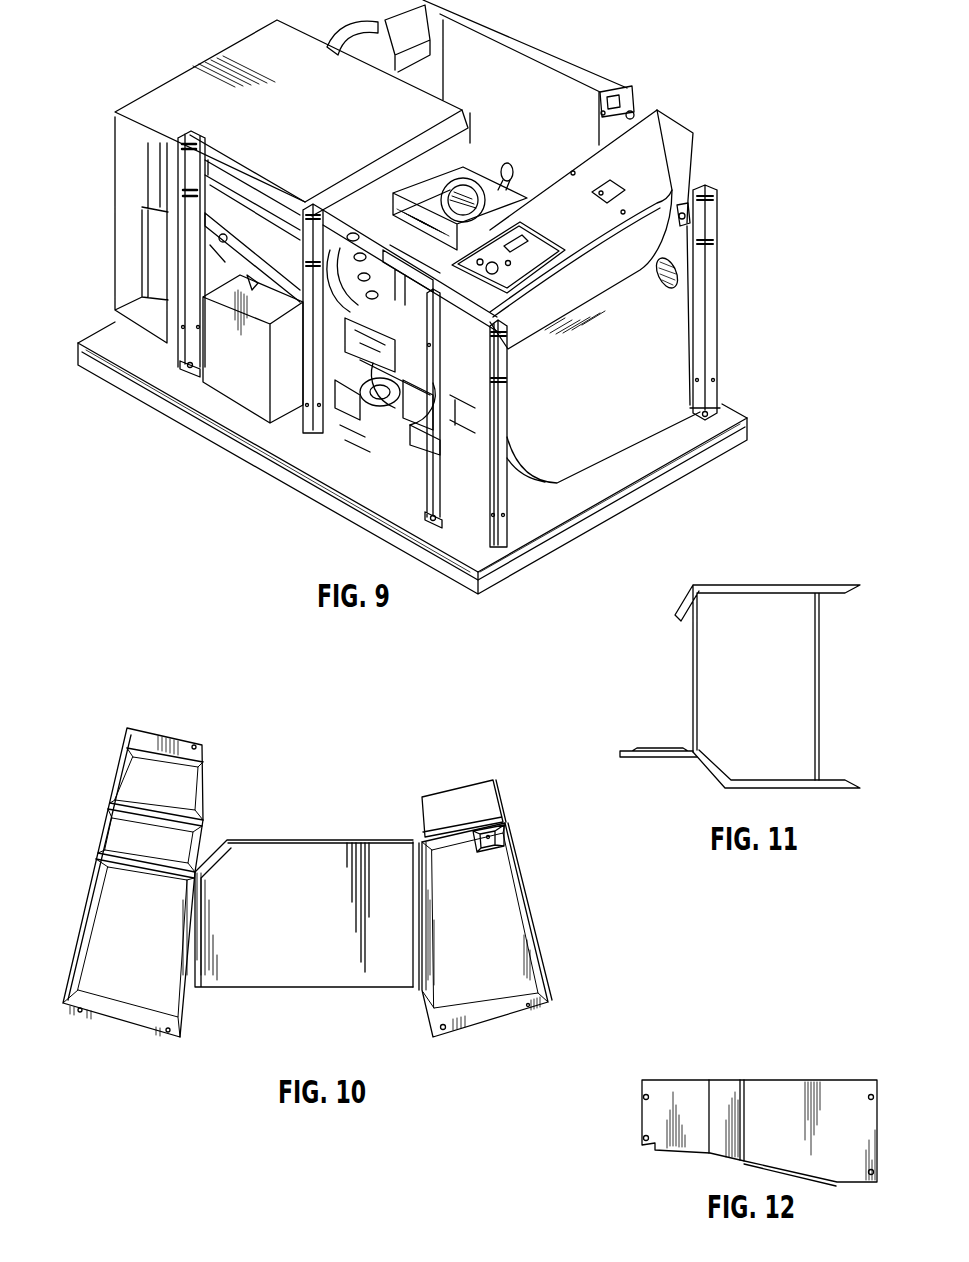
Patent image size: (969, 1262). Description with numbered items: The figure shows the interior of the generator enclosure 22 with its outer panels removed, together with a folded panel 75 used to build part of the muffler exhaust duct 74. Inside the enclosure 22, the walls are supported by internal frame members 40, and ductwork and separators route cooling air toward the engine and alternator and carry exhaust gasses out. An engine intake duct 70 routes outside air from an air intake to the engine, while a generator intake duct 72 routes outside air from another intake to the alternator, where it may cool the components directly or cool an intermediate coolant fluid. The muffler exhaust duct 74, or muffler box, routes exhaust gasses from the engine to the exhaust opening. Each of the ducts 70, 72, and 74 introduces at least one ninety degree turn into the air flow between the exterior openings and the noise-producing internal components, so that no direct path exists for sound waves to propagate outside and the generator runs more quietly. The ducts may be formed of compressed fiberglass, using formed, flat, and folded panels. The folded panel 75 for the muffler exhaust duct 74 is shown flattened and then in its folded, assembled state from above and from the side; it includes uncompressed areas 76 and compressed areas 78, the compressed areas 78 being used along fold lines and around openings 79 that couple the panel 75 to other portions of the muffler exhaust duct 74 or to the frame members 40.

In FIG. 9, the enclosure 22 is at (640, 67).
In FIG. 9, the internal frame members 40 is at (183, 263).
In FIG. 9, the engine intake duct 70 is at (683, 327).
In FIG. 9, the generator intake duct 72 is at (355, 27).
In FIG. 9, the muffler exhaust duct 74 is at (258, 37).
In FIG. 9, the folded panel 75 is at (207, 177).
In FIG. 10, the folded panel 75 is at (170, 708).
In FIG. 11, the folded panel 75 is at (710, 570).
In FIG. 12, the folded panel 75 is at (697, 1028).
In FIG. 10, the uncompressed areas 76 is at (307, 853).
In FIG. 10, the compressed areas 78 is at (487, 832).
In FIG. 10, the openings 79 is at (500, 834).